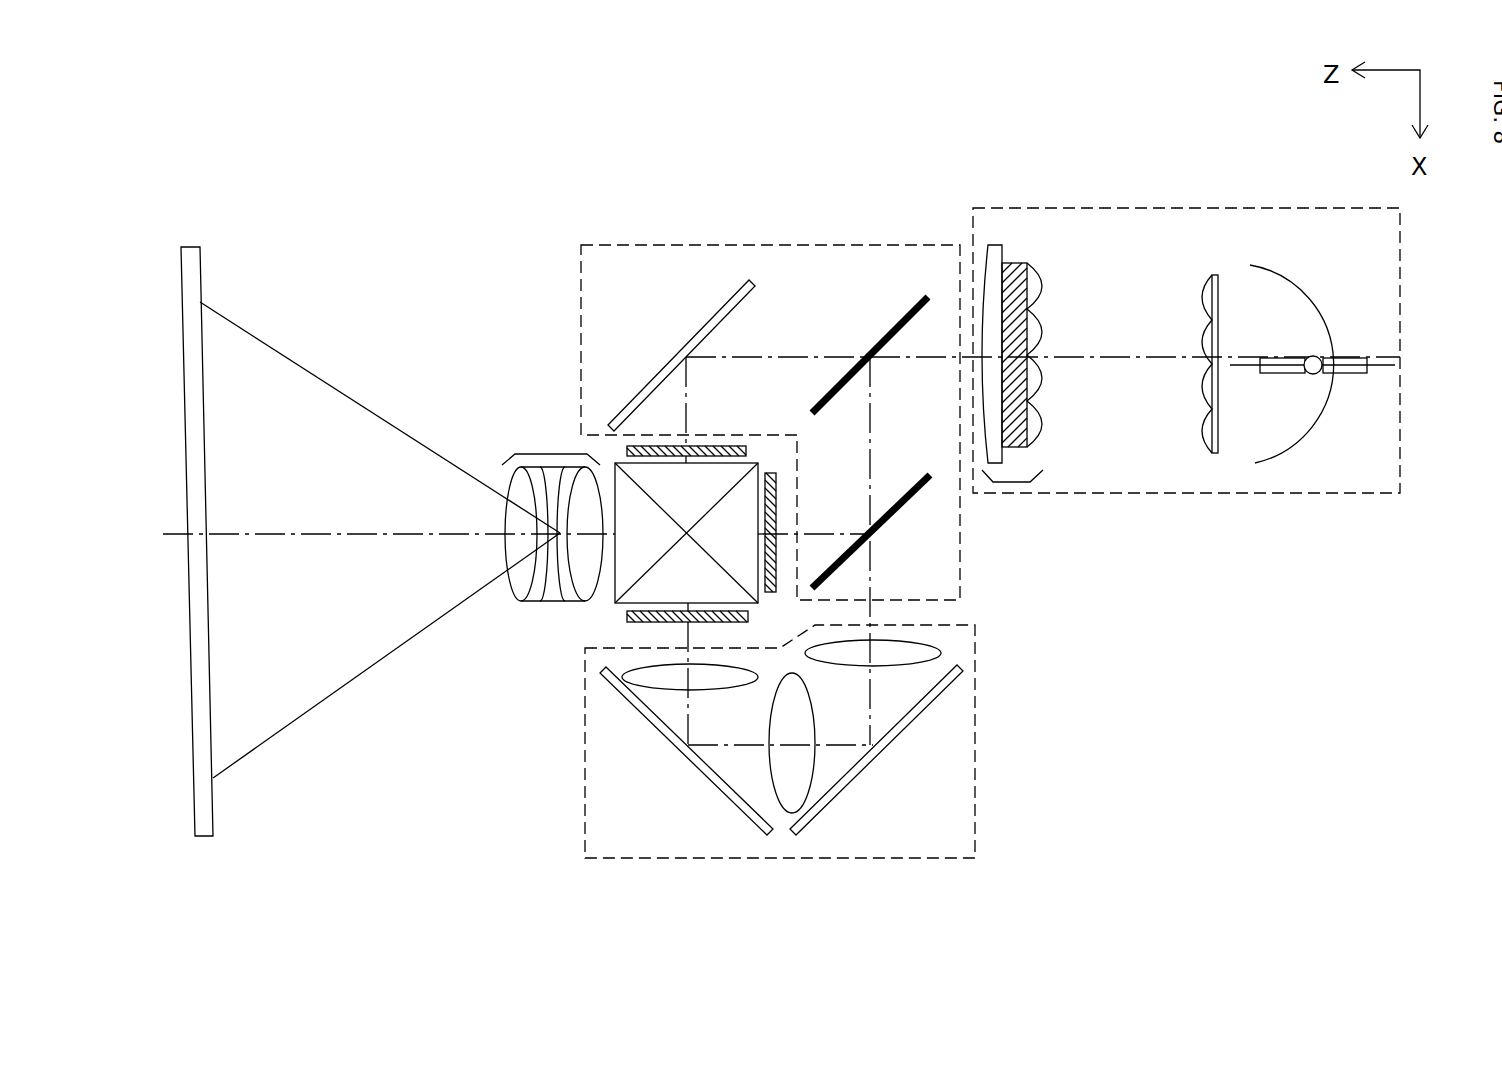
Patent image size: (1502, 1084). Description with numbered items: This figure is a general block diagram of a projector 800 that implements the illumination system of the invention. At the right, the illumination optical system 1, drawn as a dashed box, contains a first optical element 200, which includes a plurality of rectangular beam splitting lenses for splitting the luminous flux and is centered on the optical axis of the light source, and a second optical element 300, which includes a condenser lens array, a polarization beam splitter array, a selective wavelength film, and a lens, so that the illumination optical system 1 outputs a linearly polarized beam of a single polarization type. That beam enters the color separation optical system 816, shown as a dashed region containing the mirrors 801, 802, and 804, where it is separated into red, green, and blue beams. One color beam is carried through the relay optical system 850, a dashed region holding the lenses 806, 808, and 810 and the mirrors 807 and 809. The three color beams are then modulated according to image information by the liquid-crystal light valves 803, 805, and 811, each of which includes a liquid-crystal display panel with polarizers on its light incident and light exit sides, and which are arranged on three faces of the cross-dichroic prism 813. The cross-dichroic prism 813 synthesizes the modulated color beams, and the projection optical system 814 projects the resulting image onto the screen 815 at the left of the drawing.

The projector 800 is at (781, 466).
The illumination optical system 1 is at (1122, 495).
The first optical element 200 is at (1218, 453).
The second optical element 300 is at (1015, 483).
The dichroic mirror 801 is at (890, 327).
The reflecting mirror 802 is at (700, 327).
The liquid-crystal light valve 803 is at (698, 444).
The dichroic mirror 804 is at (913, 480).
The liquid-crystal light valve 805 is at (770, 473).
The relay lens 806 is at (918, 643).
The reflecting mirror 807 is at (950, 688).
The relay lens 808 is at (803, 723).
The reflecting mirror 809 is at (713, 780).
The relay lens 810 is at (717, 682).
The liquid-crystal light valve 811 is at (625, 617).
The cross-dichroic prism 813 is at (627, 580).
The projection optical system 814 is at (541, 466).
The screen 815 is at (215, 806).
The color separation optical system 816 is at (576, 263).
The relay optical system 850 is at (975, 787).